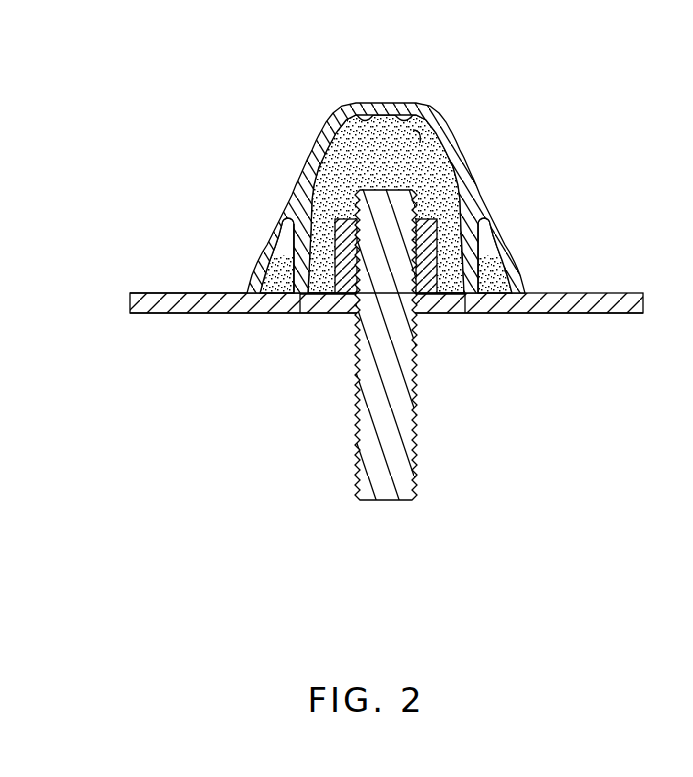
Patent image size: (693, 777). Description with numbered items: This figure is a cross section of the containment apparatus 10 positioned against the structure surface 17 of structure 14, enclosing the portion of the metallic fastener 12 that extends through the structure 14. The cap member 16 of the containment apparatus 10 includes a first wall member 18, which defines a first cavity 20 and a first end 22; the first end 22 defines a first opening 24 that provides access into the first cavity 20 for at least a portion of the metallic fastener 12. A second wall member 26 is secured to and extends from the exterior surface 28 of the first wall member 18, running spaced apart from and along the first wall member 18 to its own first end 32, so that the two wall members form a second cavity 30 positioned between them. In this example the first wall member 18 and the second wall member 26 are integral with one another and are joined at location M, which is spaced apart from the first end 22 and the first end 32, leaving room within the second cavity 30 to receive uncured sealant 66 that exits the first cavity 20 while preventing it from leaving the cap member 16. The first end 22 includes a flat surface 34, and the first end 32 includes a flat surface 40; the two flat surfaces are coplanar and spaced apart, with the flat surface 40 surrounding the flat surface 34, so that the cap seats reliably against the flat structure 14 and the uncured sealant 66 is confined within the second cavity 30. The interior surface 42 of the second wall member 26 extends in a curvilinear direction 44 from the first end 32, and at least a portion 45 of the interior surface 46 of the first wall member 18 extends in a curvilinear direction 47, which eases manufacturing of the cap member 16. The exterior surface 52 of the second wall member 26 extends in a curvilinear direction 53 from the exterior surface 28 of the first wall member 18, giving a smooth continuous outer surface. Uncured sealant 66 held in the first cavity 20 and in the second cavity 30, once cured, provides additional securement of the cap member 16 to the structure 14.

The containment apparatus 10 is at (396, 77).
The metallic fastener 12 is at (410, 357).
The structure 14 is at (594, 292).
The cap member 16 is at (326, 128).
The structure surface 17 is at (162, 293).
The first wall member 18 is at (289, 202).
The first cavity 20 is at (423, 165).
The first end 22 is at (300, 297).
The first opening 24 is at (463, 297).
The second wall member 26 is at (262, 255).
The exterior surface 28 is at (313, 150).
The second cavity 30 is at (278, 258).
The first end 32 is at (256, 306).
The flat surface 34 is at (287, 296).
The flat surface 40 is at (247, 286).
The interior surface 42 is at (266, 238).
The curvilinear direction 44 is at (253, 272).
The portion 45 is at (368, 113).
The interior surface 46 is at (352, 116).
The curvilinear direction 47 is at (406, 137).
The exterior surface 52 is at (270, 213).
The curvilinear direction 53 is at (299, 182).
The uncured sealant 66 is at (441, 185).
The location M is at (310, 176).